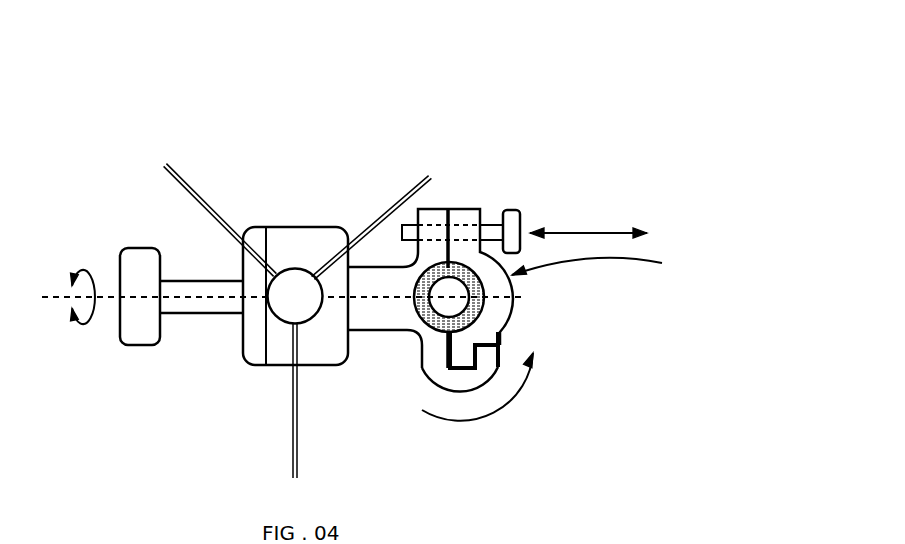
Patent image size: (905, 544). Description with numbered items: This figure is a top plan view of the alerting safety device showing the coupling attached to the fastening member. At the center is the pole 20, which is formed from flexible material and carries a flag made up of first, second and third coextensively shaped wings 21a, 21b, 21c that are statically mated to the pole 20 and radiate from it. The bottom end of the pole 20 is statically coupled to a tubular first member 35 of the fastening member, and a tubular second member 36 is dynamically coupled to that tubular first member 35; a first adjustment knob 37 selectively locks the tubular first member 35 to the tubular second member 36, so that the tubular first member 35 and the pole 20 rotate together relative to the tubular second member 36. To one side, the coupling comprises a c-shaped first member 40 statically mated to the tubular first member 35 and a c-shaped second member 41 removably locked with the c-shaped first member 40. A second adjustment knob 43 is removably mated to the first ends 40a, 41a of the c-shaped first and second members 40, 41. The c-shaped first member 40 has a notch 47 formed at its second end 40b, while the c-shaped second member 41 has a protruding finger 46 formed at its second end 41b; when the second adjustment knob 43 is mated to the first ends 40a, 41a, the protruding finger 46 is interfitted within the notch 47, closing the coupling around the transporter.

The pole 20 is at (296, 292).
The first wing 21a is at (193, 185).
The second wing 21b is at (407, 190).
The third wing 21c is at (292, 444).
The tubular first member 35 is at (328, 352).
The tubular second member 36 is at (257, 355).
The first adjustment knob 37 is at (138, 260).
The c-shaped first member 40 is at (425, 372).
The first end of c-shaped first member 40a is at (433, 224).
The second end of c-shaped first member 40b is at (480, 340).
The c-shaped second member 41 is at (497, 387).
The first end of c-shaped second member 41a is at (462, 222).
The second end of c-shaped second member 41b is at (490, 368).
The second adjustment knob 43 is at (509, 225).
The protruding finger 46 is at (462, 350).
The notch 47 is at (463, 370).